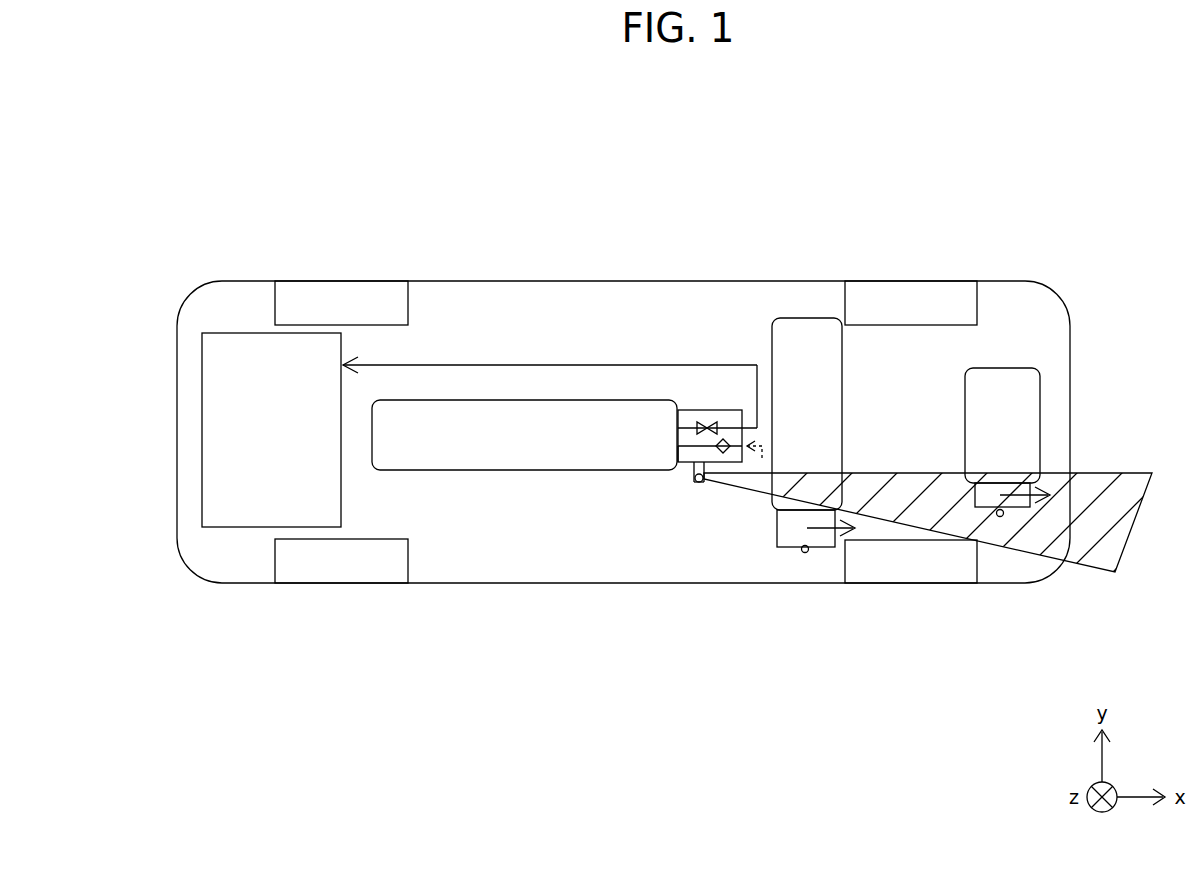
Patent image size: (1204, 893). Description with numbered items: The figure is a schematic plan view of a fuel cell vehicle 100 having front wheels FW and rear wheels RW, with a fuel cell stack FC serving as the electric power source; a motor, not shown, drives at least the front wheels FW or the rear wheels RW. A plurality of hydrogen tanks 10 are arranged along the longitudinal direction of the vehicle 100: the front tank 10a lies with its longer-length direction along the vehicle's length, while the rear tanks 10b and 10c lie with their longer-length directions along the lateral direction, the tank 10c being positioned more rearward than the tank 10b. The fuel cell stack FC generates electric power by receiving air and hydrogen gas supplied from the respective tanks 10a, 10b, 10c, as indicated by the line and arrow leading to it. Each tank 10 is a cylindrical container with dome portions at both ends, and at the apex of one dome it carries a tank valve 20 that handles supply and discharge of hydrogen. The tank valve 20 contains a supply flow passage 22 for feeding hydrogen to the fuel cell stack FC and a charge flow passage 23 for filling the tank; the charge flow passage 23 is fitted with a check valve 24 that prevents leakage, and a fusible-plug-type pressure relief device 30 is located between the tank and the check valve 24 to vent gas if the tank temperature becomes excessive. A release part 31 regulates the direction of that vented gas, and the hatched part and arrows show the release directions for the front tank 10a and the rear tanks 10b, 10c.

The vehicle 100 is at (1085, 207).
The tanks 10 is at (618, 158).
The tank 10a is at (638, 400).
The tank 10b is at (803, 318).
The tank 10c is at (1008, 368).
The tank valve 20 is at (684, 470).
The supply flow passage 22 is at (693, 410).
The charge flow passage 23 is at (683, 463).
The check valve 24 is at (724, 439).
The pressure relief device 30 is at (699, 483).
The release part 31 is at (705, 477).
The fuel cell stack FC is at (240, 527).
The front wheels FW is at (385, 295).
The rear wheels RW is at (952, 300).